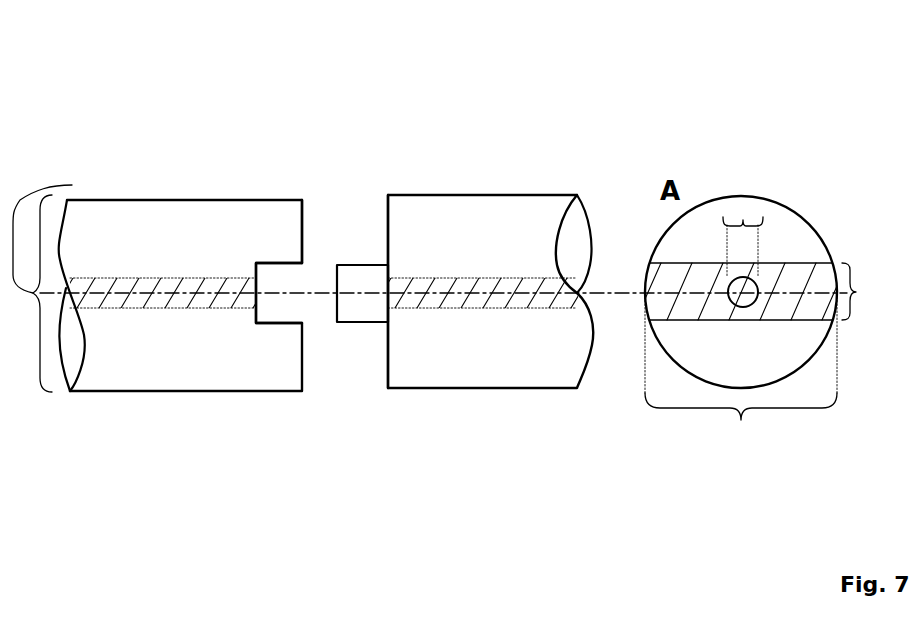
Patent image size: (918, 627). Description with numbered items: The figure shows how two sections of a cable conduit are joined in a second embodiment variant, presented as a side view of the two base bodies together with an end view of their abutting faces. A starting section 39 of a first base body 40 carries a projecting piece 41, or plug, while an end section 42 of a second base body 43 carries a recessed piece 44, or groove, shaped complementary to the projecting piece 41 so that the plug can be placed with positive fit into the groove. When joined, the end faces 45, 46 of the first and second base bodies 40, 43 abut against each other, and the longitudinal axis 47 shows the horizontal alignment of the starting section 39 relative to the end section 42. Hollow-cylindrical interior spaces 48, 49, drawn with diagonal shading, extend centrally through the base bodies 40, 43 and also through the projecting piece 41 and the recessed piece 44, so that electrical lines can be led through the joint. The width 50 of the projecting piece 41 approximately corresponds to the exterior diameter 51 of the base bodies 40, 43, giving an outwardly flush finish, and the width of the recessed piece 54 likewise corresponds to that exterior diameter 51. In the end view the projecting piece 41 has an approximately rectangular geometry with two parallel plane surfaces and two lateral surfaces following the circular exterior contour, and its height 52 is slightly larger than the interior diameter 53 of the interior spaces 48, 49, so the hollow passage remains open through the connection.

The starting section 39 is at (383, 126).
The first base body 40 is at (500, 373).
The projecting piece 41 is at (367, 310).
The end section 42 is at (297, 128).
The second base body 43 is at (187, 378).
The recessed piece 44 is at (278, 310).
The end face 45 is at (308, 226).
The end face 46 is at (376, 224).
The longitudinal axis 47 is at (612, 291).
The interior space 48 is at (150, 288).
The interior space 49 is at (530, 277).
The width of the projecting piece 50 is at (741, 323).
The exterior diameter 51 is at (34, 186).
The height of the projecting piece 52 is at (856, 292).
The interior diameter 53 is at (743, 221).
The width of the recessed piece 54 is at (741, 323).